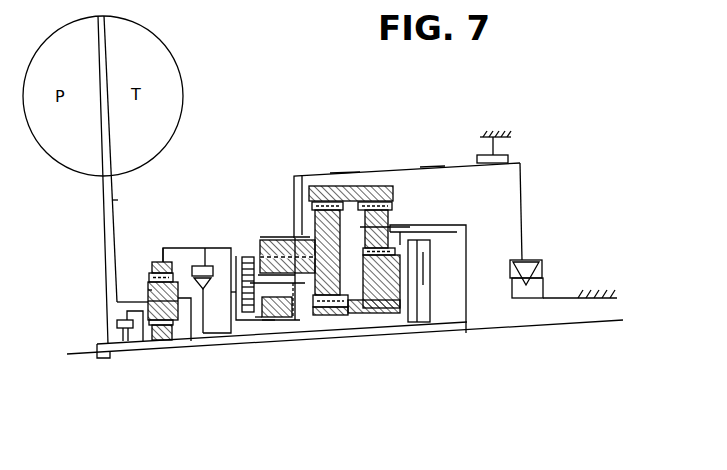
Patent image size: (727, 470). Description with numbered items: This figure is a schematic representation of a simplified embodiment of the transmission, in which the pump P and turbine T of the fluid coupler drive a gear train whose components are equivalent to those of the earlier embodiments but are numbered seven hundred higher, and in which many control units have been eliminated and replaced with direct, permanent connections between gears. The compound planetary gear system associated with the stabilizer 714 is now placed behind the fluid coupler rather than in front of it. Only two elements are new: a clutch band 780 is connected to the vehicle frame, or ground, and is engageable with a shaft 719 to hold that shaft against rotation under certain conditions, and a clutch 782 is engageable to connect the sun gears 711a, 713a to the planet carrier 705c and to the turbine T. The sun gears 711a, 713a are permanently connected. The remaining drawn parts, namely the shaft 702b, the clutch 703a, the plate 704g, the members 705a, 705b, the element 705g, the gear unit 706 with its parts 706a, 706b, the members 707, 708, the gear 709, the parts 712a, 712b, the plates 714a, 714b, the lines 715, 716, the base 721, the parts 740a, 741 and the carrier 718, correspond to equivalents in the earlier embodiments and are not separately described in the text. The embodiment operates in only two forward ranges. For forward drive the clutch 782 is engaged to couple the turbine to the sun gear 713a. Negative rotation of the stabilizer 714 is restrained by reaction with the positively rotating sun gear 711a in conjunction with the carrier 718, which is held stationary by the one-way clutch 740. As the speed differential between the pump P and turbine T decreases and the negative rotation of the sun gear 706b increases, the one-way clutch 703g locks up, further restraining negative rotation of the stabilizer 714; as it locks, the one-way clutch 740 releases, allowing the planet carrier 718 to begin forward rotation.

The drive shaft 702b is at (104, 217).
The clutch 703a is at (163, 343).
The one-way clutch 703g is at (100, 318).
The clutch plate 704g is at (148, 290).
The link arm 705a is at (118, 200).
The support block 705b is at (270, 320).
The planet carrier 705c is at (192, 320).
The valve 705g is at (207, 258).
The housing 706 is at (230, 292).
The housing base 706a is at (268, 321).
The sun gear 706b is at (163, 262).
The bearing block 707 is at (369, 313).
The support plate 708 is at (257, 318).
The gear 709 is at (250, 252).
The sun gear 711a is at (342, 250).
The coupling block 712a is at (270, 238).
The lower bearing 712b is at (345, 318).
The sun gear 713a is at (392, 296).
The stabilizer 714 is at (345, 172).
The top plate 714a is at (322, 186).
The bearings 714b is at (392, 205).
The line 715 is at (407, 225).
The housing 716 is at (448, 275).
The carrier 718 is at (294, 190).
The shaft 719 is at (433, 166).
The base 721 is at (577, 328).
The one-way clutch 740 is at (548, 270).
The switch body 740a is at (512, 292).
The frame right wall 741 is at (526, 204).
The clutch band 780 is at (507, 154).
The clutch 782 is at (433, 271).